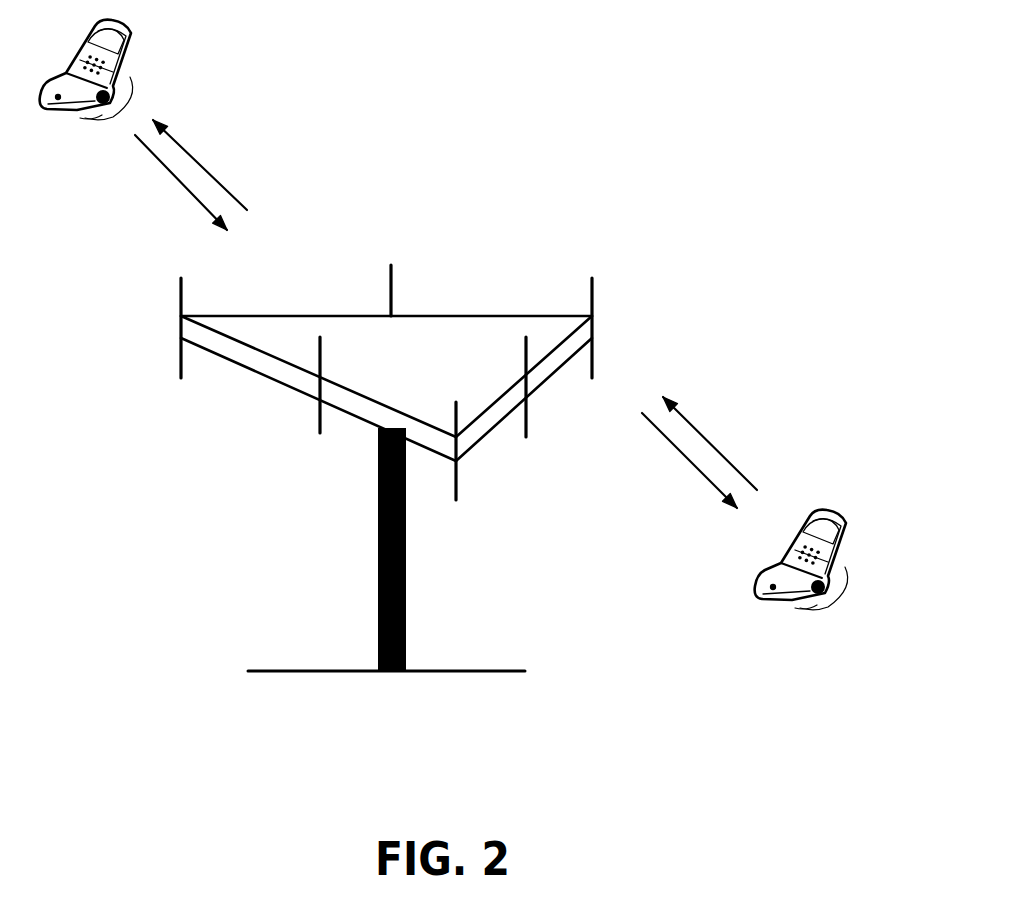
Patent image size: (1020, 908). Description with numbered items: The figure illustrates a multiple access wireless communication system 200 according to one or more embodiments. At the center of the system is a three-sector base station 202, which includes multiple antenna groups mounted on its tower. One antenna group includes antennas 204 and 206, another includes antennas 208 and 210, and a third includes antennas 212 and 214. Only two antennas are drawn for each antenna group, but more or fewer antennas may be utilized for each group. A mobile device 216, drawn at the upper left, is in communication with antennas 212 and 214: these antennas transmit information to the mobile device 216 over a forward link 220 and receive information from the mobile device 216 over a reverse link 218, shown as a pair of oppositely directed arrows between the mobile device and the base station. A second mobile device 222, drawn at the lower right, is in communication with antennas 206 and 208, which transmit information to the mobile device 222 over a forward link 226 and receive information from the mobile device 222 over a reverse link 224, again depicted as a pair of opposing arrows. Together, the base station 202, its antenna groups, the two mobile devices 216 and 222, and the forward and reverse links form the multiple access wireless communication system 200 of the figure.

The multiple access wireless communication system 200 is at (556, 80).
The 3-sector base station 202 is at (406, 672).
The antenna 204 is at (592, 278).
The antenna 206 is at (526, 414).
The antenna 208 is at (456, 480).
The antenna 210 is at (320, 432).
The antenna 212 is at (182, 280).
The antenna 214 is at (391, 272).
The mobile device 216 is at (100, 25).
The reverse link 218 is at (193, 195).
The forward link 220 is at (202, 167).
The mobile device 222 is at (810, 517).
The reverse link 224 is at (706, 439).
The forward link 226 is at (697, 468).